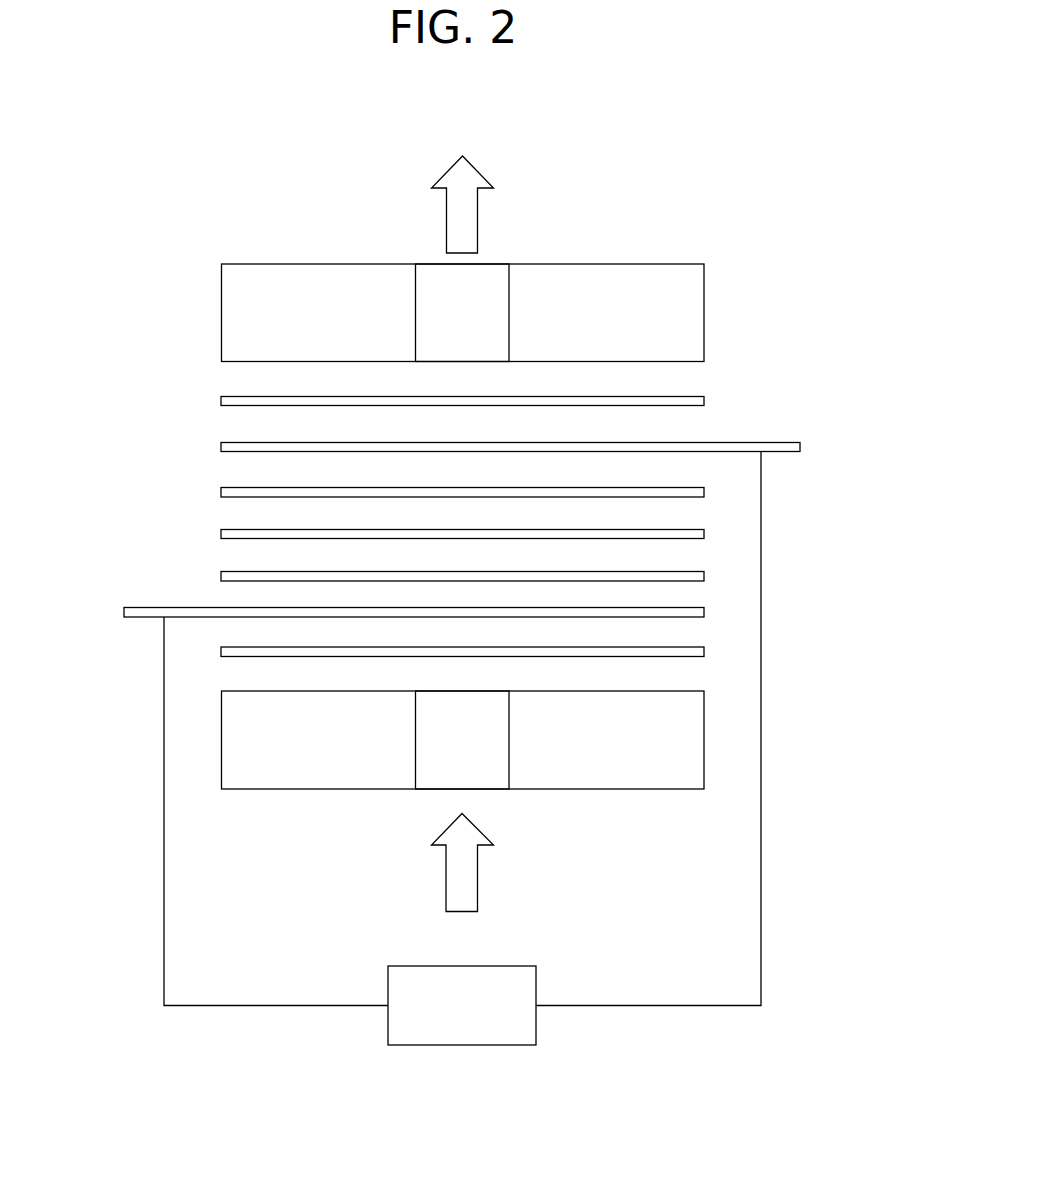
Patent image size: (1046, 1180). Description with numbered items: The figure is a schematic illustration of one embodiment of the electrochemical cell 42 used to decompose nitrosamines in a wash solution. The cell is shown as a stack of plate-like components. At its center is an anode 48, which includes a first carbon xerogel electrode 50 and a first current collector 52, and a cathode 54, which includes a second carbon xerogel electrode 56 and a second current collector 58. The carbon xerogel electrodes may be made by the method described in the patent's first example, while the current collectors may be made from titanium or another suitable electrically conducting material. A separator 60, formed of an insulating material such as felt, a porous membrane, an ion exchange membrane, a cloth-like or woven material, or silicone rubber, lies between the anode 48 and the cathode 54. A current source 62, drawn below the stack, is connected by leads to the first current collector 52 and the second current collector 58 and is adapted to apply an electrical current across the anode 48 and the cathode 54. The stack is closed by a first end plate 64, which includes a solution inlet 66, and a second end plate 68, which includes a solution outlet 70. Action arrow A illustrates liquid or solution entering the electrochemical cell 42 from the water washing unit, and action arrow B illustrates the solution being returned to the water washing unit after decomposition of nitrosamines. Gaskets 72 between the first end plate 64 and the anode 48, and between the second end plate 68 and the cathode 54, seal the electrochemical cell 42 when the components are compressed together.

The electrochemical cell 42 is at (683, 213).
The anode 48 is at (364, 615).
The first carbon xerogel electrode 50 is at (232, 574).
The first current collector 52 is at (393, 658).
The cathode 54 is at (560, 437).
The second carbon xerogel electrode 56 is at (528, 508).
The second current collector 58 is at (787, 442).
The separator 60 is at (703, 533).
The current source 62 is at (473, 1045).
The first end plate 64 is at (617, 771).
The solution inlet 66 is at (438, 765).
The second end plate 68 is at (700, 291).
The solution outlet 70 is at (480, 290).
The gaskets 72 is at (220, 400).
The action arrow A is at (469, 880).
The action arrow B is at (457, 225).